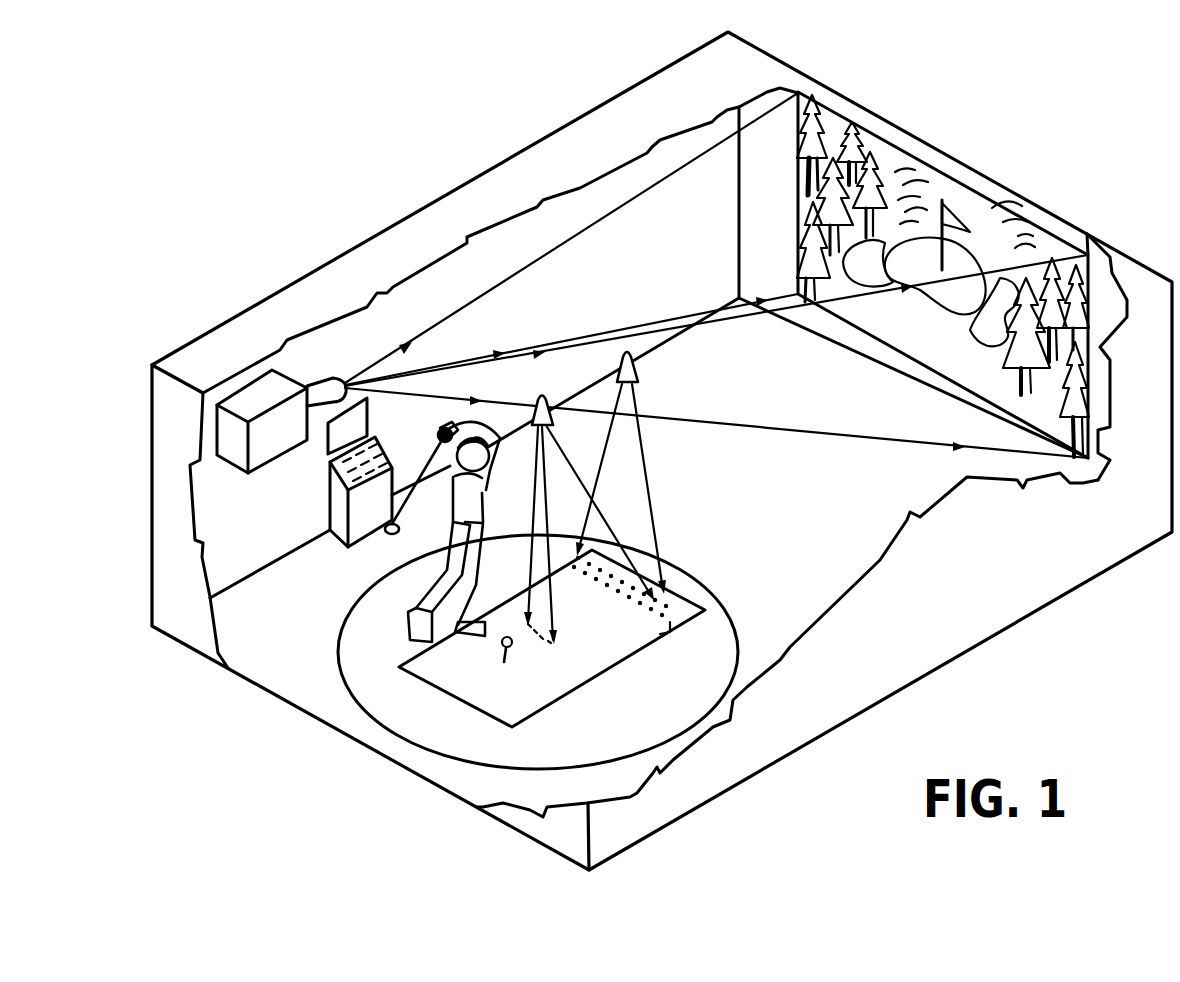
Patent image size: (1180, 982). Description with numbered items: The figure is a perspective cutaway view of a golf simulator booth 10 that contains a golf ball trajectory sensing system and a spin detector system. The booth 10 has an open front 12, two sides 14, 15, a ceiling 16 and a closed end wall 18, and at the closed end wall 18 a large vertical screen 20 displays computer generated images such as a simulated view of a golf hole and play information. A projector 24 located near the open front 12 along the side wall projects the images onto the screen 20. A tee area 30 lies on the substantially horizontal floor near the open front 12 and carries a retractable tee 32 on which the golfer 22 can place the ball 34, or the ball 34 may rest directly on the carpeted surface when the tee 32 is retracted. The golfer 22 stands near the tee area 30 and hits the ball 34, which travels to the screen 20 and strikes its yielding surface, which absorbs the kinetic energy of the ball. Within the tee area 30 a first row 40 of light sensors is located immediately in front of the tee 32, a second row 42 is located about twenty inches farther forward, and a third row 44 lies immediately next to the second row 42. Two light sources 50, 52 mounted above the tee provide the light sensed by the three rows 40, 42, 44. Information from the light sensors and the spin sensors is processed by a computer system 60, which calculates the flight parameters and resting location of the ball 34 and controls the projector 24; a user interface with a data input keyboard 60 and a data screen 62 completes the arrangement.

The golf simulator booth 10 is at (1072, 126).
The open front 12 is at (279, 681).
The side 14 is at (1077, 565).
The side 15 is at (635, 252).
The ceiling 16 is at (417, 228).
The closed end wall 18 is at (930, 143).
The vertical screen 20 is at (990, 213).
The golfer 22 is at (482, 511).
The projector 24 is at (252, 400).
The tee area 30 is at (491, 700).
The retractable tee 32 is at (508, 652).
The golf ball 34 is at (495, 648).
The first row of light sensors 40 is at (555, 645).
The second row of light sensors 42 is at (670, 632).
The third row of light sensors 44 is at (673, 610).
The light source 50 is at (545, 397).
The light source 52 is at (640, 367).
The computer system 60 is at (333, 507).
The data screen 62 is at (355, 422).